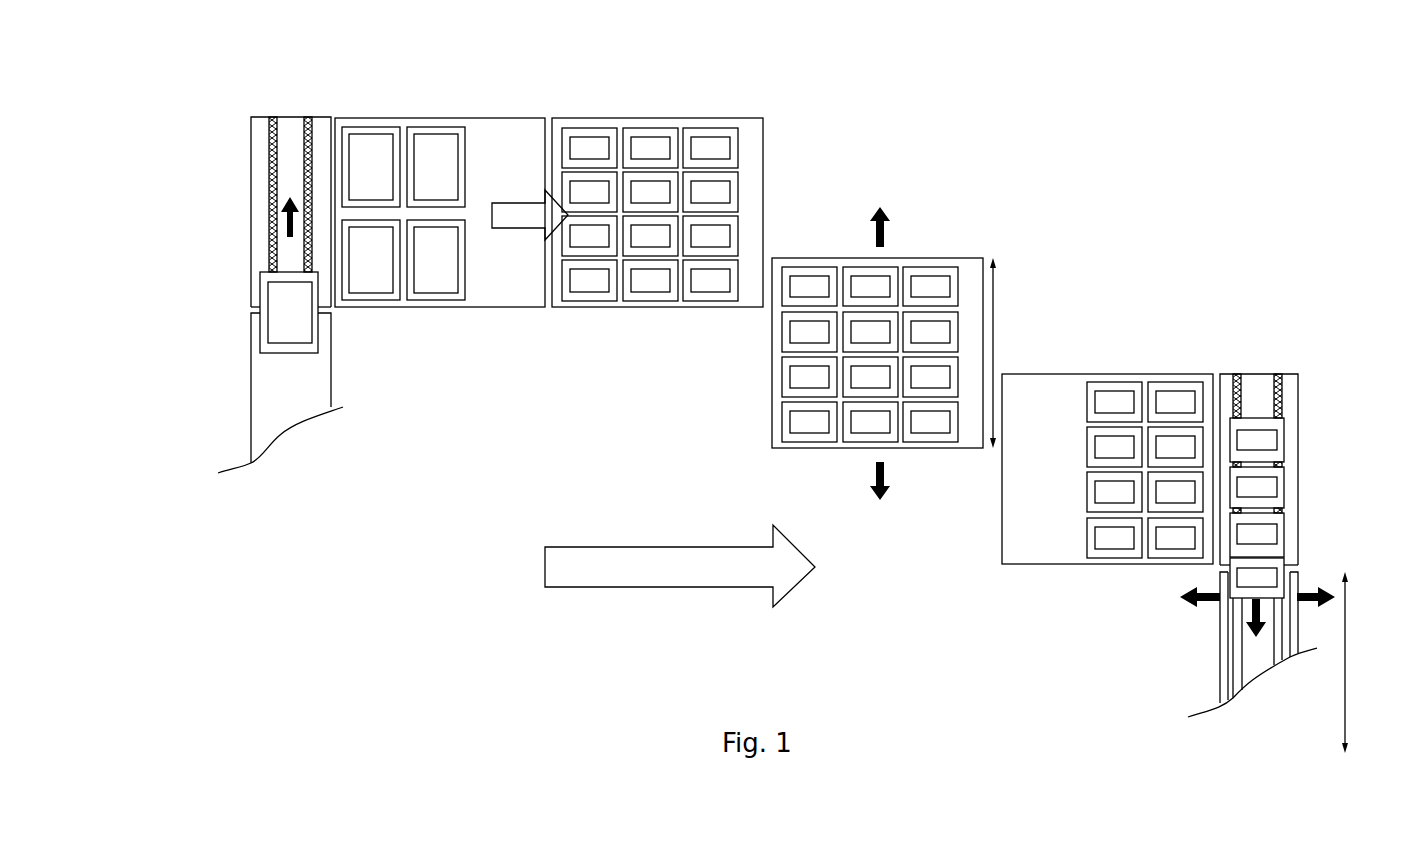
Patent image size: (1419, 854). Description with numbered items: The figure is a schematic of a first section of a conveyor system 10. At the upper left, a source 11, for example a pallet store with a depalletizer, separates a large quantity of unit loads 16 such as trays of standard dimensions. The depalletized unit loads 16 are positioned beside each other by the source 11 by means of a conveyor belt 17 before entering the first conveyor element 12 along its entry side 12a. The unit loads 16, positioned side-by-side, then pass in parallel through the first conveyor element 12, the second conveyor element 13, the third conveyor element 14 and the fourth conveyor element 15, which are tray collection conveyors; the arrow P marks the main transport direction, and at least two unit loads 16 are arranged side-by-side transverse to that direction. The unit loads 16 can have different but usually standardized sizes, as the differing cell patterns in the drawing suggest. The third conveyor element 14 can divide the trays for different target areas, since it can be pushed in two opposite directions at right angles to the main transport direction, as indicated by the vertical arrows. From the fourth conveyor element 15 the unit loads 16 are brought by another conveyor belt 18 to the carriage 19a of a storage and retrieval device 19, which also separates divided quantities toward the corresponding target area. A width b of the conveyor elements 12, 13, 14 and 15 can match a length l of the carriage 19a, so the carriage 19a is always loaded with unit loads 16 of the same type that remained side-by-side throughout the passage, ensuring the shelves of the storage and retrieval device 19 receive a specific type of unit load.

The conveyor system 10 is at (980, 151).
The source 11 is at (295, 395).
The first conveyor element 12 is at (488, 138).
The entry side 12a is at (337, 128).
The second conveyor element 13 is at (675, 120).
The third conveyor element 14 is at (778, 345).
The fourth conveyor element 15 is at (1028, 557).
The unit load 16 is at (290, 310).
The conveyor belt 17 is at (268, 184).
The conveyor belt 18 is at (1238, 373).
The storage and retrieval device 19 is at (1156, 667).
The carriage 19a is at (1240, 685).